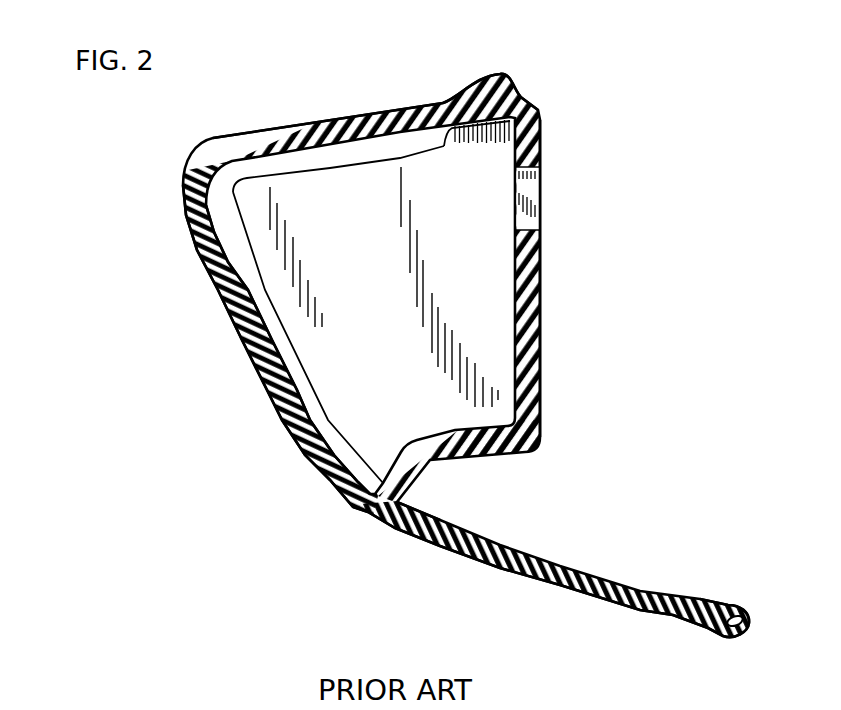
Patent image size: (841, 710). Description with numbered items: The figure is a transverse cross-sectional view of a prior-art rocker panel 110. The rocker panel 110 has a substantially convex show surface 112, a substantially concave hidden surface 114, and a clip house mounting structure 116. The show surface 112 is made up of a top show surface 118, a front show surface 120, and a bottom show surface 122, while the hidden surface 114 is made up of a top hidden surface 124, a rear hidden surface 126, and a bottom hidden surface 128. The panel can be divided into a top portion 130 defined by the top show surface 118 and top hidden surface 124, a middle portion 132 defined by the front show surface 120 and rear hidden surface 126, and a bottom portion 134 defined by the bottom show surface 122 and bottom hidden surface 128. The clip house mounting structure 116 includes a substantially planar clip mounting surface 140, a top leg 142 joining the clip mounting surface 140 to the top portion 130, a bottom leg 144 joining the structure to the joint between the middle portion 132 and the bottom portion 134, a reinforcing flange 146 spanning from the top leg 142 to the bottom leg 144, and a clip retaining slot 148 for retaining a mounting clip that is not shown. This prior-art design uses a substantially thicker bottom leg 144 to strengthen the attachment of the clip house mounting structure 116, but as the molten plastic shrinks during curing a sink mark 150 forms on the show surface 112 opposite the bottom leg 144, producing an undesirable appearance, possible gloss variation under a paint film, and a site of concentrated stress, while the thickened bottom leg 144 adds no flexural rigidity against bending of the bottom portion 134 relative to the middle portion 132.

The rocker panel 110 is at (416, 355).
The show surface 112 is at (207, 288).
The hidden surface 114 is at (583, 556).
The clip house mounting structure 116 is at (548, 379).
The top show surface 118 is at (256, 121).
The front show surface 120 is at (255, 395).
The bottom show surface 122 is at (505, 585).
The top hidden surface 124 is at (323, 160).
The rear hidden surface 126 is at (352, 442).
The bottom hidden surface 128 is at (684, 582).
The top portion 130 is at (363, 118).
The middle portion 132 is at (320, 448).
The bottom portion 134 is at (622, 611).
The clip mounting surface 140 is at (550, 287).
The top leg 142 is at (542, 104).
The bottom leg 144 is at (410, 478).
The reinforcing flange 146 is at (371, 301).
The clip retaining slot 148 is at (550, 210).
The sink mark 150 is at (385, 502).